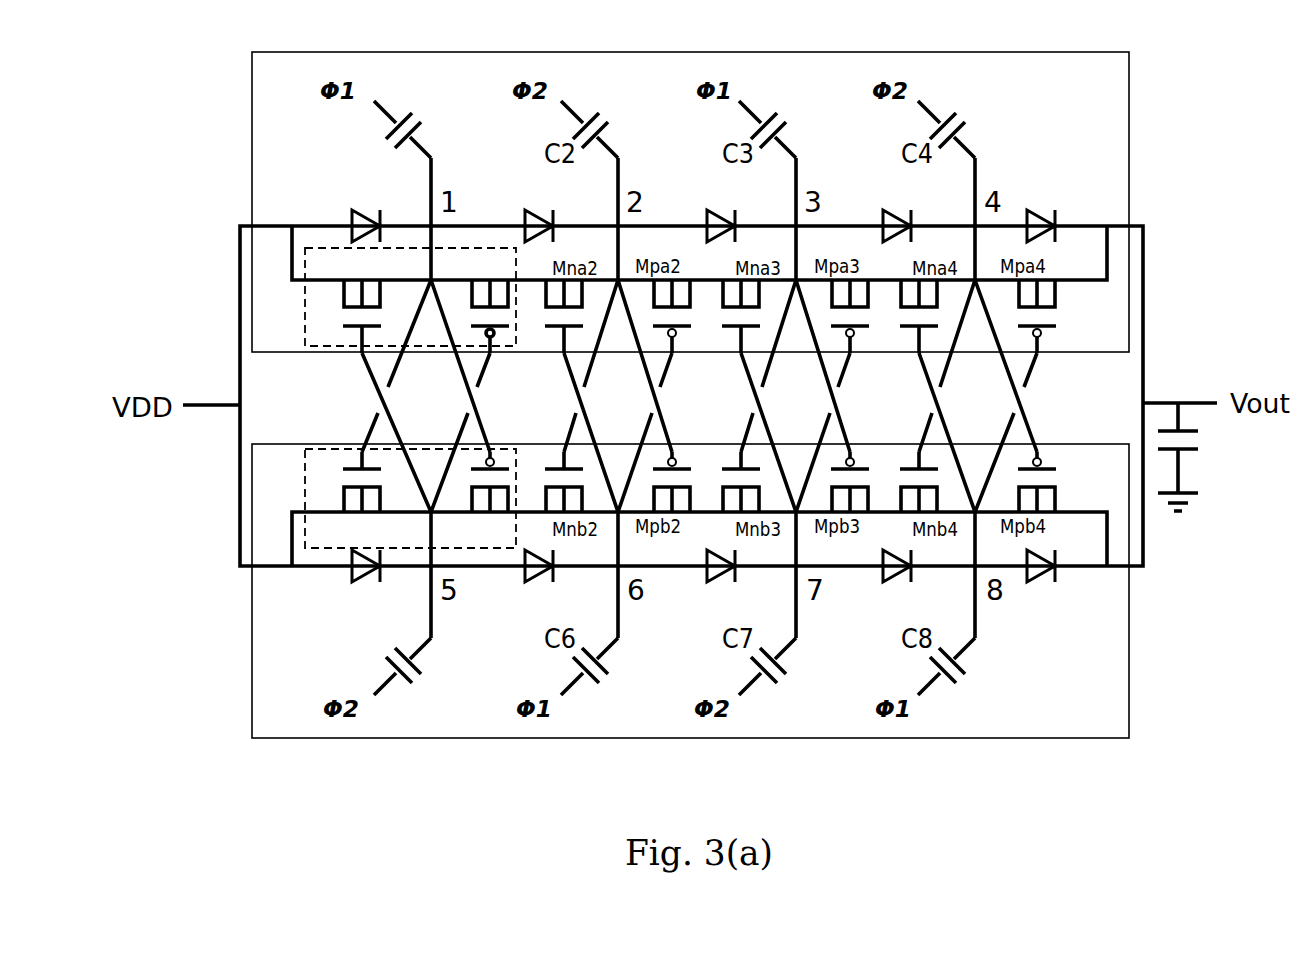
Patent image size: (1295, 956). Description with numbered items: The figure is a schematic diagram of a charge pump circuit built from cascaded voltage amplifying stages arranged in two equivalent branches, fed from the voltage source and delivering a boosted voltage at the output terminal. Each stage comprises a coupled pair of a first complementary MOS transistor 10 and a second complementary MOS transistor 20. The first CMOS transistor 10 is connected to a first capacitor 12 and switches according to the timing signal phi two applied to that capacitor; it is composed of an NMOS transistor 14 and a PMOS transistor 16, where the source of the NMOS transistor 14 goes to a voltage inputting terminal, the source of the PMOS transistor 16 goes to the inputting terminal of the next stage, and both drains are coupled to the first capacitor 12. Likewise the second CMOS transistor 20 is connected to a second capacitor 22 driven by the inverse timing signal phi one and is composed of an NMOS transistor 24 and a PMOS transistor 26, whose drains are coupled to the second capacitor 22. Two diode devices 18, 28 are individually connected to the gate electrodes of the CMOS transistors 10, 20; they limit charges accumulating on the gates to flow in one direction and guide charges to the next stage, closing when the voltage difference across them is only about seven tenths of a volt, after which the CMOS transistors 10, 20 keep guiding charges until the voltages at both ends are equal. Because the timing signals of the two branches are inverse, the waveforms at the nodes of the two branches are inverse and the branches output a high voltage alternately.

The first complementary MOS transistor 10 is at (300, 312).
The second complementary MOS transistor 20 is at (300, 482).
The first capacitor 12 is at (398, 674).
The NMOS transistor 14 is at (323, 267).
The PMOS transistor 16 is at (477, 243).
The diode device 18 is at (527, 226).
The second capacitor 22 is at (414, 120).
The NMOS transistor 24 is at (326, 568).
The PMOS transistor 26 is at (480, 537).
The diode device 28 is at (537, 587).